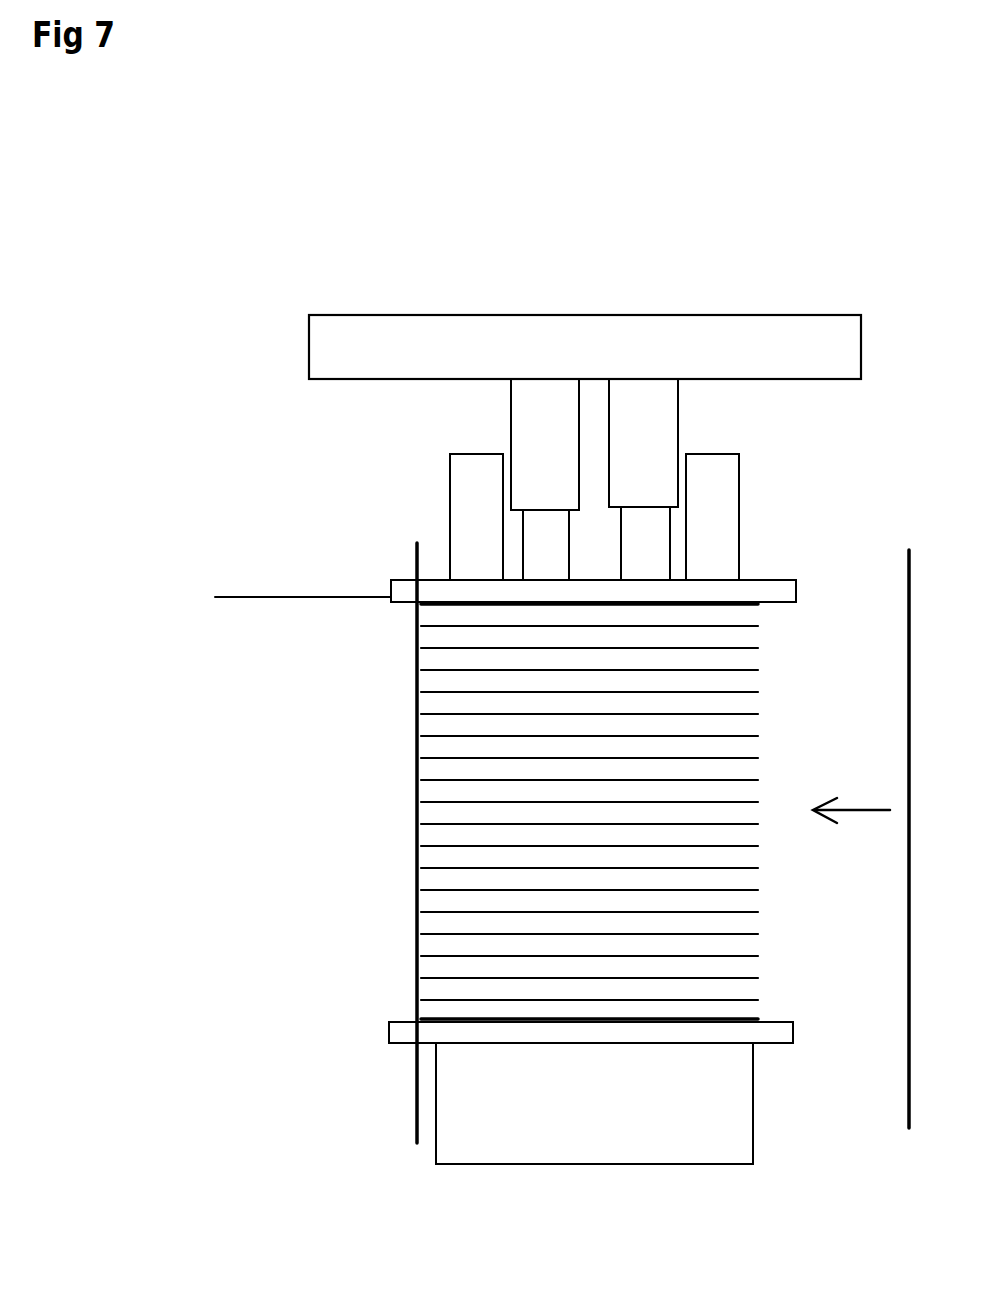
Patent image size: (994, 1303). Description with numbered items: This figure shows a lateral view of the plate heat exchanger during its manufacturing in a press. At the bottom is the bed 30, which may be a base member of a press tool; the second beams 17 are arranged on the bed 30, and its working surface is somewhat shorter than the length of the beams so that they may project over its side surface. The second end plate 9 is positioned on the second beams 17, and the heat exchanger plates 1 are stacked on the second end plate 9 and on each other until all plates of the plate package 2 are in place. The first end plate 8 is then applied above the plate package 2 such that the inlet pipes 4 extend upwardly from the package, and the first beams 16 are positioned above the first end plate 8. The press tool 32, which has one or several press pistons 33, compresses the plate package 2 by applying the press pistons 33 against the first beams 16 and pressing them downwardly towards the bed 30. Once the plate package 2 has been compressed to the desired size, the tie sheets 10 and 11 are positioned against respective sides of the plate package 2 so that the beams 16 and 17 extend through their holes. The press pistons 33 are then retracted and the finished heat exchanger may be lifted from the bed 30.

The heat exchanger plates 1 is at (525, 890).
The plate package 2 is at (640, 745).
The inlet pipes 4 is at (473, 488).
The first end plate 8 is at (567, 608).
The second end plate 9 is at (498, 1019).
The tie sheet 10 is at (433, 926).
The tie sheet 11 is at (907, 722).
The first beams 16 is at (722, 593).
The second beams 17 is at (633, 1030).
The bed 30 is at (498, 1092).
The press tool 32 is at (302, 347).
The press pistons 33 is at (646, 537).